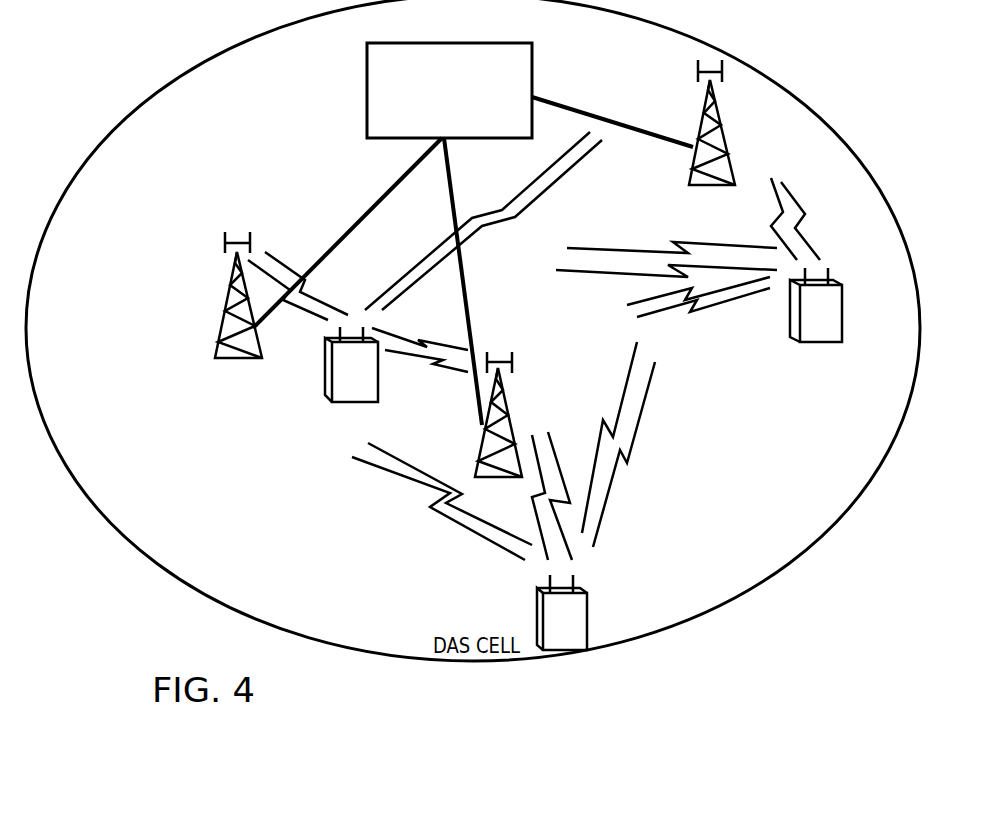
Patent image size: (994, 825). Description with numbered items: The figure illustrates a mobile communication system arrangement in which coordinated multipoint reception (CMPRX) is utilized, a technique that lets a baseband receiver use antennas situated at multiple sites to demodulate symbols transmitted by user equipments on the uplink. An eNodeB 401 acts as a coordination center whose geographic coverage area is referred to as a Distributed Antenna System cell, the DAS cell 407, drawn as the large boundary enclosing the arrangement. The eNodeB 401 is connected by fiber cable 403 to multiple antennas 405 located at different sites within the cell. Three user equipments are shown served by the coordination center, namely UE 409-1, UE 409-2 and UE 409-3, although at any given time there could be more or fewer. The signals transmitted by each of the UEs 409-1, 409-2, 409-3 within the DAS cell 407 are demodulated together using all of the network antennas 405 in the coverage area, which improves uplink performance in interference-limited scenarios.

The eNodeB 401 is at (532, 82).
The fiber cable 403 is at (578, 108).
The antennas 405 is at (728, 143).
The DAS cell 407 is at (247, 616).
The UE 409-1 is at (587, 637).
The UE 409-2 is at (378, 392).
The UE 409-3 is at (842, 328).